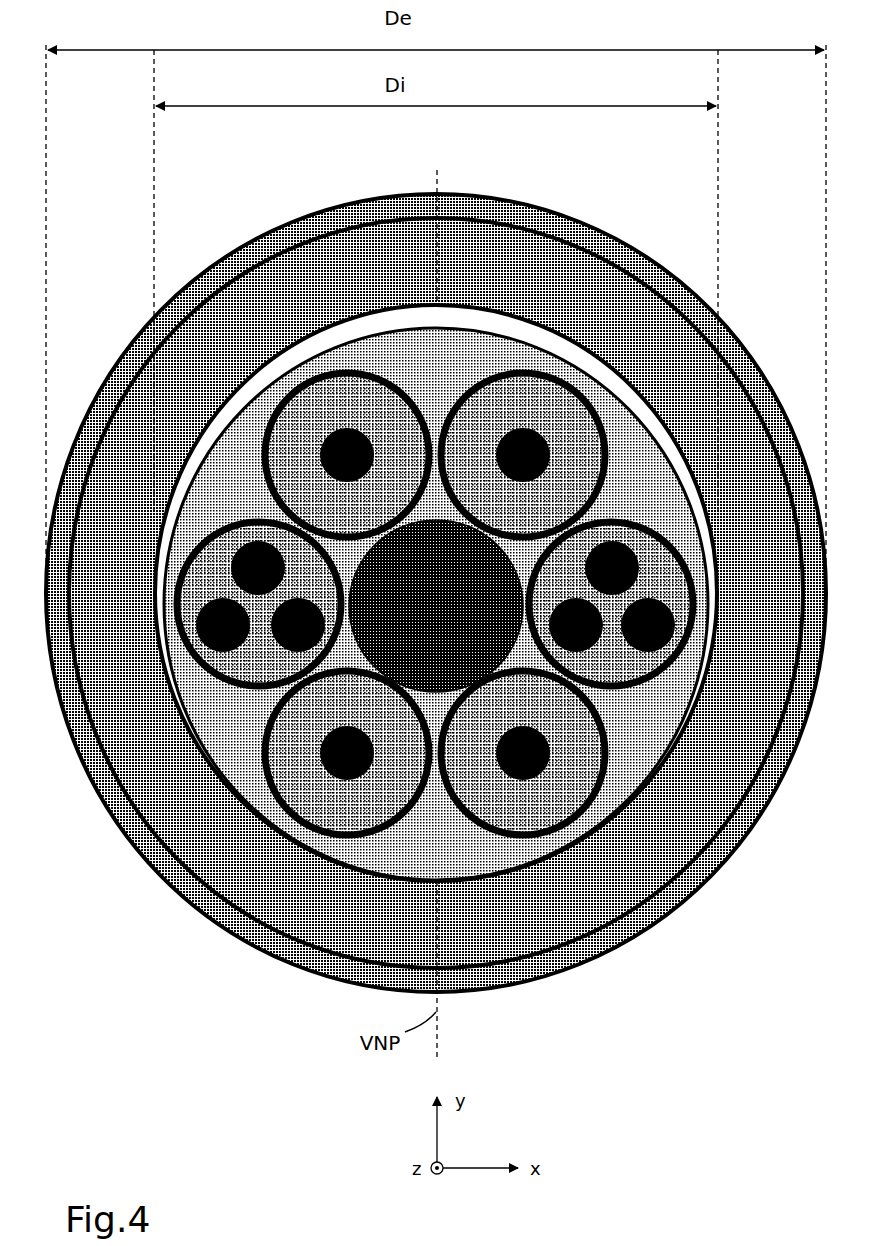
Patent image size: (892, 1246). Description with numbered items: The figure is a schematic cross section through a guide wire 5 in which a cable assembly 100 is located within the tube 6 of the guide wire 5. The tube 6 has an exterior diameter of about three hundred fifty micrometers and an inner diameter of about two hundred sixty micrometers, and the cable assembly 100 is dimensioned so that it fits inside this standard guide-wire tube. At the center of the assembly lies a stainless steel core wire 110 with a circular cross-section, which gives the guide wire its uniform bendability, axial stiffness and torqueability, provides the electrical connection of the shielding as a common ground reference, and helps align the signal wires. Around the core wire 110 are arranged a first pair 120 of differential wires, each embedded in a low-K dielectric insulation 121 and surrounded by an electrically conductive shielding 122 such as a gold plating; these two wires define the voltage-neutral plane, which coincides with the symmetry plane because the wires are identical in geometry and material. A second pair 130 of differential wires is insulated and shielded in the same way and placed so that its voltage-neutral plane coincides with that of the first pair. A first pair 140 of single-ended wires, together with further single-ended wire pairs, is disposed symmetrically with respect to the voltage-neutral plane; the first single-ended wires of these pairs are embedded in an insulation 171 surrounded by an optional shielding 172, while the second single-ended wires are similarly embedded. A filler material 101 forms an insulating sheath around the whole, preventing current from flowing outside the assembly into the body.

The guide wire 5 is at (648, 984).
The tube 6 is at (640, 872).
The cable assembly 100 is at (352, 333).
The filler material 101 is at (645, 725).
The core wire 110 is at (436, 606).
The first pair of differential wires 120 is at (359, 431).
The insulation 121 is at (553, 403).
The electrically conductive shielding 122 is at (607, 417).
The second pair of differential wires 130 is at (365, 775).
The first pair of single-ended wires 140 is at (235, 550).
The insulation 171 is at (259, 604).
The shielding 172 is at (222, 662).